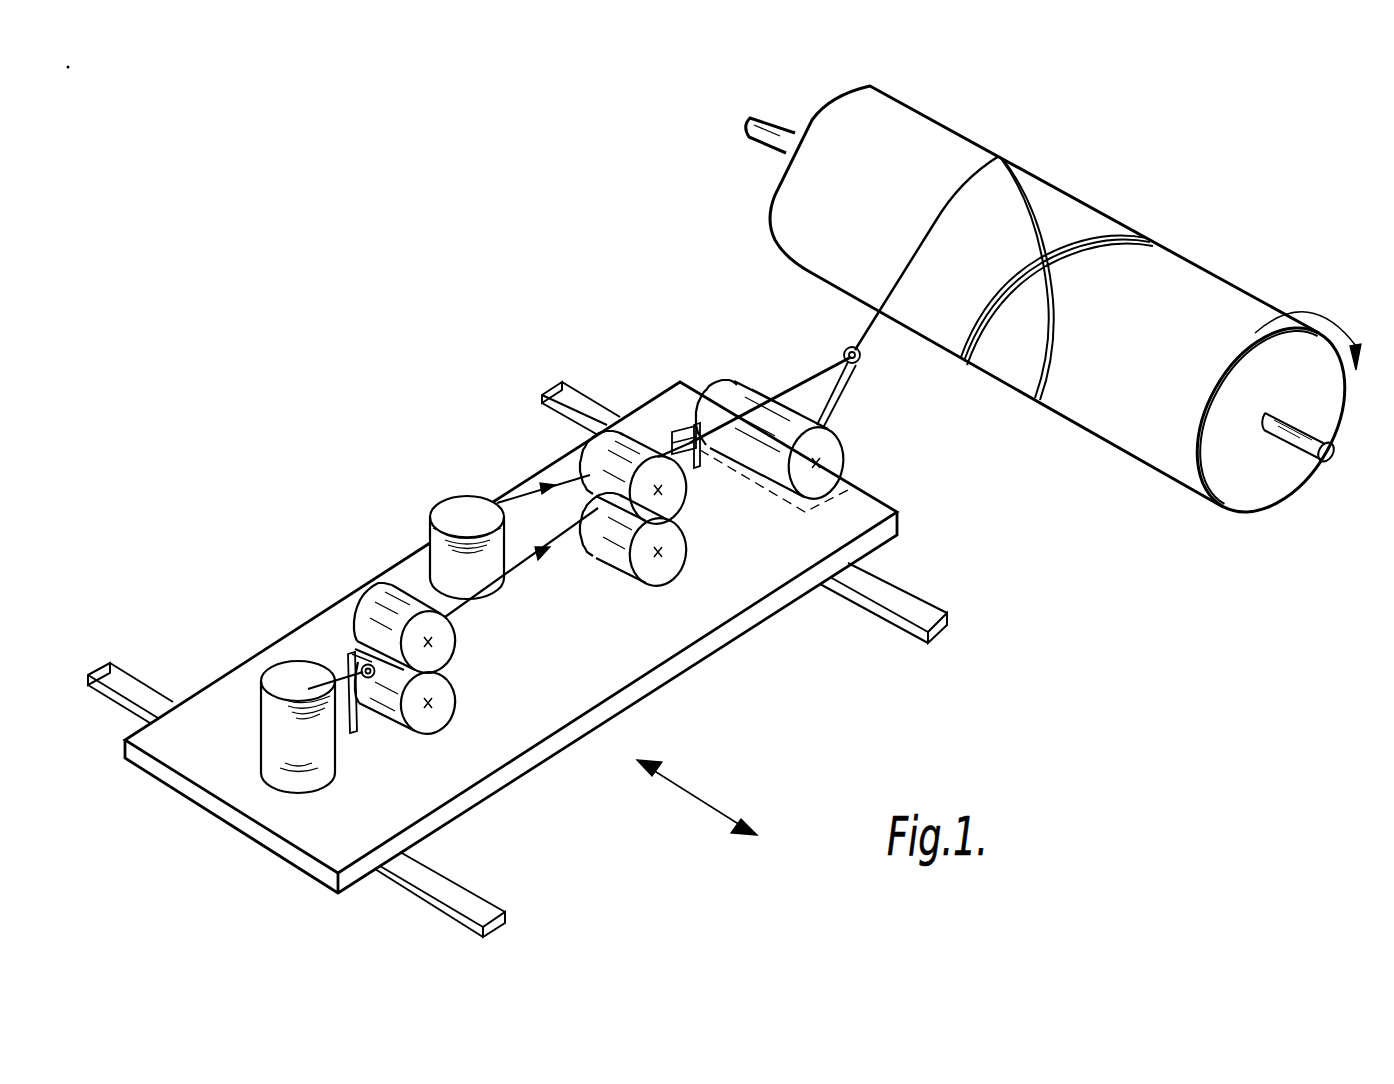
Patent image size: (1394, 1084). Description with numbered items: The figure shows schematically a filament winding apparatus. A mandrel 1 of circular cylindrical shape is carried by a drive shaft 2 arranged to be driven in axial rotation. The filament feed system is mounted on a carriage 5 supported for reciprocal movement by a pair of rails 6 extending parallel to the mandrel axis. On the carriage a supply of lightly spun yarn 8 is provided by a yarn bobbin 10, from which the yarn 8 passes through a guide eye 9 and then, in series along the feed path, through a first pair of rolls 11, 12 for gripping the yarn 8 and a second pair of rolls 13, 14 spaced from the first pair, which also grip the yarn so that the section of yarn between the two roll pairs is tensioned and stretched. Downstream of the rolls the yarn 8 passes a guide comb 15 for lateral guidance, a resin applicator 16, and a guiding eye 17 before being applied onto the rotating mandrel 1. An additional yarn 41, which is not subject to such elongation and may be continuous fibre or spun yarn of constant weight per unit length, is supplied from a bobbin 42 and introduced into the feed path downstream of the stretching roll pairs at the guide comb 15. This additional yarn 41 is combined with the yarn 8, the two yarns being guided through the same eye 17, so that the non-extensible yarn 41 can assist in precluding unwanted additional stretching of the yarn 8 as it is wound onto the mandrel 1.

The mandrel 1 is at (1172, 283).
The drive shaft 2 is at (1313, 432).
The carriage 5 is at (487, 752).
The rails 6 is at (913, 598).
The yarn 8 is at (528, 562).
The guide eye 9 is at (362, 660).
The yarn bobbin 10 is at (287, 710).
The roll of first pair 11 is at (408, 723).
The roll of first pair 12 is at (370, 605).
The roll of second pair 13 is at (645, 575).
The roll of second pair 14 is at (603, 462).
The guide comb 15 is at (682, 430).
The resin applicator 16 is at (743, 360).
The guiding eye 17 is at (842, 353).
The additional yarn 41 is at (517, 497).
The bobbin 42 is at (450, 503).